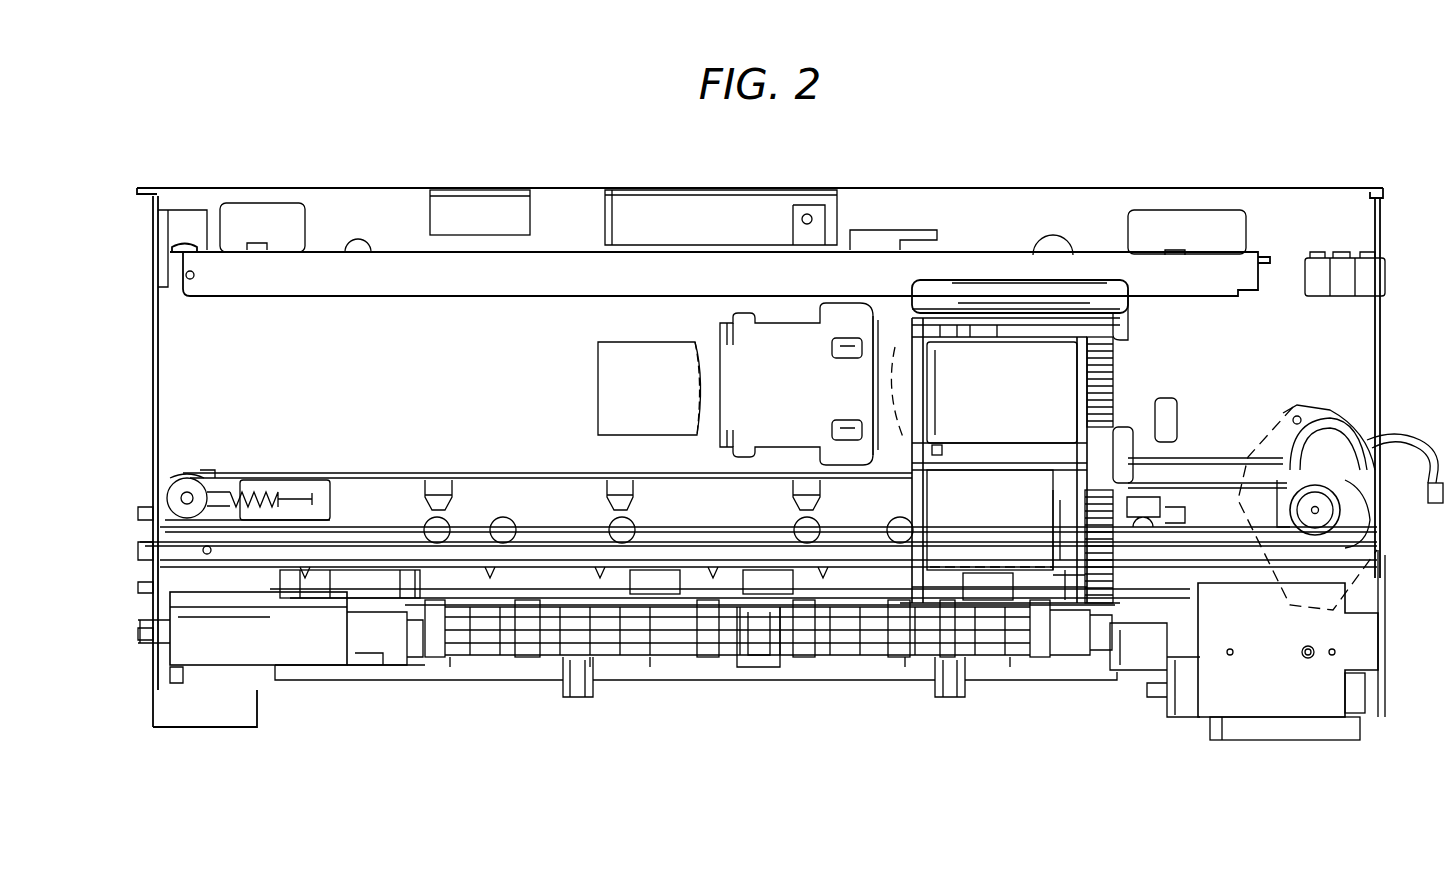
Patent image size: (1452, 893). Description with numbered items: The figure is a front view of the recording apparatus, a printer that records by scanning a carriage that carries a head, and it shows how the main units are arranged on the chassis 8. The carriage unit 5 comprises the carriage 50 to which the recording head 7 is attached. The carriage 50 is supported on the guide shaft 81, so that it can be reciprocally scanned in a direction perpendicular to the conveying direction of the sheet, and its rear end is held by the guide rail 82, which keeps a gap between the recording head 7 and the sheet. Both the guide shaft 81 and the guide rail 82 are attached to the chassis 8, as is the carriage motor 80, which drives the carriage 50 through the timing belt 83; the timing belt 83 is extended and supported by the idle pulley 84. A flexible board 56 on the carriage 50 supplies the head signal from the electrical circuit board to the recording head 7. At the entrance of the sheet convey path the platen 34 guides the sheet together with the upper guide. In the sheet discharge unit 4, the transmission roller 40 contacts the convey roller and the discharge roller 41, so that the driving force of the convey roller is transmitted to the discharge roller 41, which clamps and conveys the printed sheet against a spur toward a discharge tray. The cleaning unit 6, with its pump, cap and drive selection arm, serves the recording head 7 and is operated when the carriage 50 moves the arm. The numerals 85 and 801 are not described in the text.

The sheet discharge unit 4 is at (678, 656).
The carriage unit 5 is at (1003, 280).
The cleaning unit 6 is at (1218, 694).
The recording head 7 is at (1048, 388).
The chassis 8 is at (1353, 352).
The platen 34 is at (308, 655).
The transmission roller 40 is at (577, 690).
The discharge roller 41 is at (525, 658).
The carriage 50 is at (1076, 295).
The flexible board 56 is at (647, 358).
The carriage motor 80 is at (1353, 452).
The guide shaft 81 is at (1337, 560).
The guide rail 82 is at (553, 268).
The timing belt 83 is at (331, 476).
The idle pulley 84 is at (228, 492).
The paper guide plate 85 is at (776, 343).
The pulley shaft 801 is at (1325, 515).